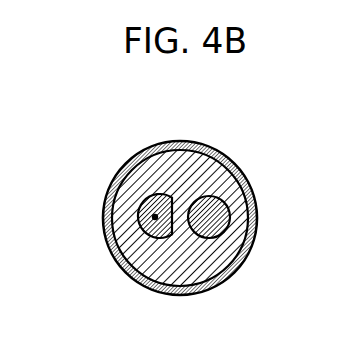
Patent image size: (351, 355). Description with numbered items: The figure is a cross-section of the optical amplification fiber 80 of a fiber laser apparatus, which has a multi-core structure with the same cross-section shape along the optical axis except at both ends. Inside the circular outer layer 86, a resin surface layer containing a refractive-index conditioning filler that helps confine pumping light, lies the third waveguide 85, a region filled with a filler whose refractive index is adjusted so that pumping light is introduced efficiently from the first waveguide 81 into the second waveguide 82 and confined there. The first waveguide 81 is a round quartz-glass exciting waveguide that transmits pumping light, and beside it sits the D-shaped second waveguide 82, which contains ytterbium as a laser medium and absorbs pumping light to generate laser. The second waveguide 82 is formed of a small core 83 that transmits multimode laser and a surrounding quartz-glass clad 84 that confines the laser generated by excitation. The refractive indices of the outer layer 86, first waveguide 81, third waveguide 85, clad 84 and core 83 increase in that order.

The optical amplification fiber 80 is at (173, 210).
The first waveguide 81 is at (230, 217).
The second waveguide 82 is at (112, 211).
The core 83 is at (159, 207).
The clad 84 is at (142, 210).
The third waveguide 85 is at (227, 182).
The outer layer 86 is at (238, 273).